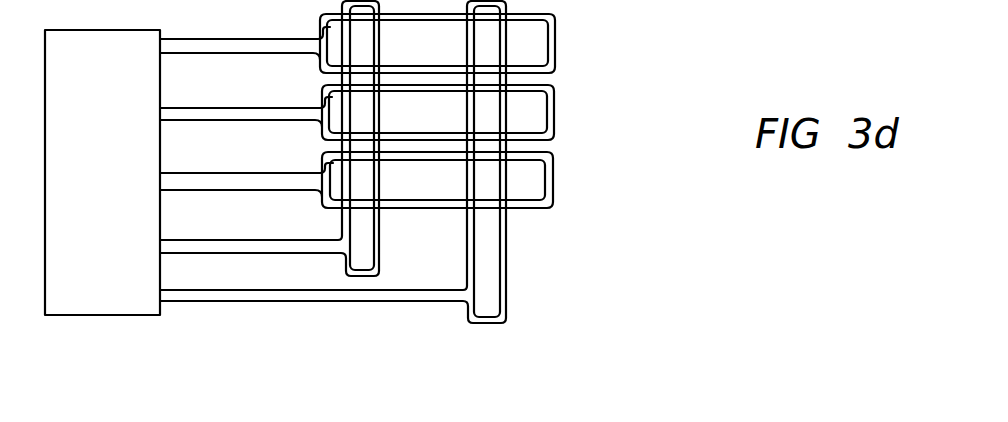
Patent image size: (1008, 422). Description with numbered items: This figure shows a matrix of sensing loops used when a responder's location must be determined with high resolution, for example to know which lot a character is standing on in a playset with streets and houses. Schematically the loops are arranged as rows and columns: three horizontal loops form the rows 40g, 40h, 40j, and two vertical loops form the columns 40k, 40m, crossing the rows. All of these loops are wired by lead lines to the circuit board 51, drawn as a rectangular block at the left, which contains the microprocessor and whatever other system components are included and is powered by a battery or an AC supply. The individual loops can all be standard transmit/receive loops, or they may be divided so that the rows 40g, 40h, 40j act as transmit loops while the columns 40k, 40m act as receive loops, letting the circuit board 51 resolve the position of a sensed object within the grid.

The circuit board 51 is at (62, 315).
The transmit loop row 40g is at (553, 28).
The transmit loop row 40h is at (553, 98).
The transmit loop row 40j is at (553, 167).
The receive loop column 40k is at (507, 288).
The receive loop column 40m is at (362, 277).